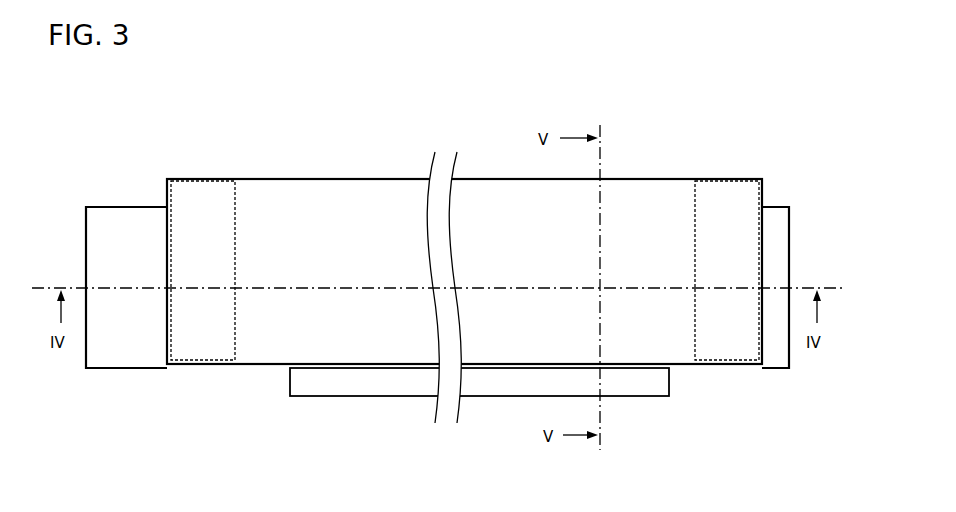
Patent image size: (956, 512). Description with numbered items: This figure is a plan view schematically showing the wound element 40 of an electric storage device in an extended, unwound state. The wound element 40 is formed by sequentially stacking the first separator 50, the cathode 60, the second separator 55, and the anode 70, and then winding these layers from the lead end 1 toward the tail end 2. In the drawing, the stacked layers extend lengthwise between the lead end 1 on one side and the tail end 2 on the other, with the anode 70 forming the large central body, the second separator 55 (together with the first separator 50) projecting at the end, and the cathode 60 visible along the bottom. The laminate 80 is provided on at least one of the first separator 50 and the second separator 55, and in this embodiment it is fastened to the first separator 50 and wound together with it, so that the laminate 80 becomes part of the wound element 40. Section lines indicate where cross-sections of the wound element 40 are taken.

The wound element 40 is at (432, 292).
The anode 70 is at (300, 225).
The laminate 80 is at (197, 340).
The second separator 55 is at (116, 343).
The first separator 50 is at (122, 317).
The cathode 60 is at (370, 377).
The lead end 1 is at (101, 317).
The tail end 2 is at (830, 263).